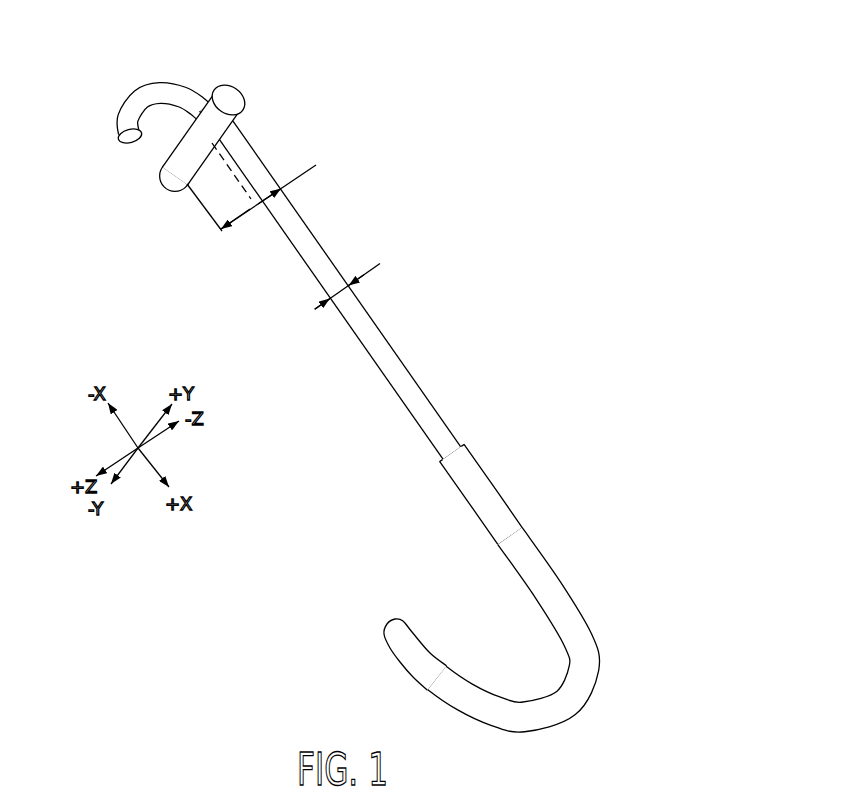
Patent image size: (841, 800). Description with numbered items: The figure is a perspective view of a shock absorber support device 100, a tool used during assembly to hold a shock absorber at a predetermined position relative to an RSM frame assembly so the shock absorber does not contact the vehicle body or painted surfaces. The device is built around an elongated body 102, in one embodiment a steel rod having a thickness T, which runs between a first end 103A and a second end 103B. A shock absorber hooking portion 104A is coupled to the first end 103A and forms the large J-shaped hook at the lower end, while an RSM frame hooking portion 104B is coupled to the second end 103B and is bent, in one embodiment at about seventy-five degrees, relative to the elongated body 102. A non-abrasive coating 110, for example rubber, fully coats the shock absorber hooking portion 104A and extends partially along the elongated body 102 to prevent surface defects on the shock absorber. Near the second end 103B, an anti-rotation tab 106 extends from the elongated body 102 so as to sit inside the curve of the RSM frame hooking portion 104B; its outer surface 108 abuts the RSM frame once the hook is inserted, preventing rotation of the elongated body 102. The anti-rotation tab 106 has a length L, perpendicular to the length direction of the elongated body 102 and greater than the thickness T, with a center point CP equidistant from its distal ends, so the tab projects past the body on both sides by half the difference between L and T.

The shock absorber support device 100 is at (687, 97).
The elongated body 102 is at (409, 372).
The first end 103A is at (637, 562).
The second end 103B is at (141, 284).
The shock absorber hooking portion 104A is at (549, 640).
The RSM frame hooking portion 104B is at (127, 79).
The anti-rotation tab 106 is at (170, 150).
The outer surface 108 is at (180, 184).
The non-abrasive coating 110 is at (483, 471).
The center point CP is at (206, 136).
The length L is at (257, 190).
The thickness T is at (356, 284).